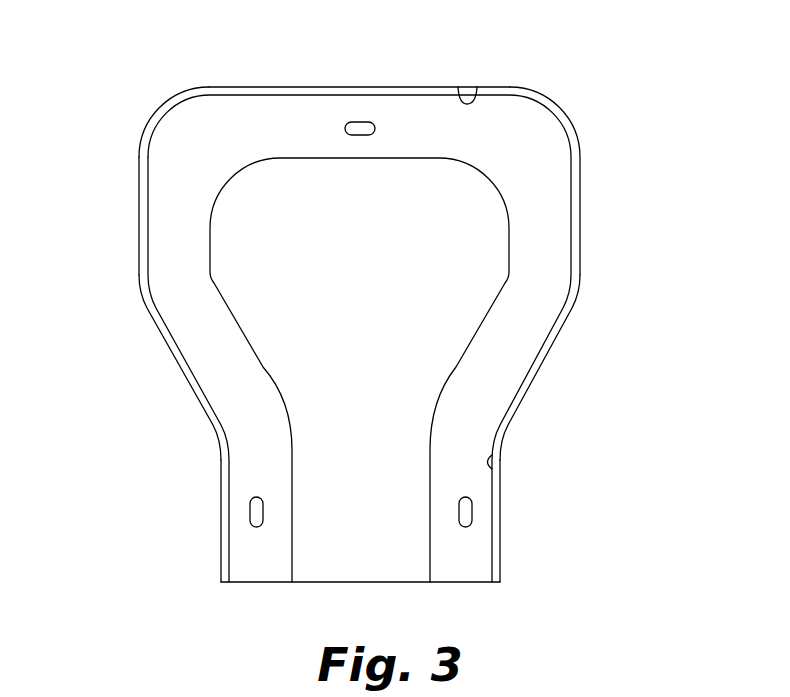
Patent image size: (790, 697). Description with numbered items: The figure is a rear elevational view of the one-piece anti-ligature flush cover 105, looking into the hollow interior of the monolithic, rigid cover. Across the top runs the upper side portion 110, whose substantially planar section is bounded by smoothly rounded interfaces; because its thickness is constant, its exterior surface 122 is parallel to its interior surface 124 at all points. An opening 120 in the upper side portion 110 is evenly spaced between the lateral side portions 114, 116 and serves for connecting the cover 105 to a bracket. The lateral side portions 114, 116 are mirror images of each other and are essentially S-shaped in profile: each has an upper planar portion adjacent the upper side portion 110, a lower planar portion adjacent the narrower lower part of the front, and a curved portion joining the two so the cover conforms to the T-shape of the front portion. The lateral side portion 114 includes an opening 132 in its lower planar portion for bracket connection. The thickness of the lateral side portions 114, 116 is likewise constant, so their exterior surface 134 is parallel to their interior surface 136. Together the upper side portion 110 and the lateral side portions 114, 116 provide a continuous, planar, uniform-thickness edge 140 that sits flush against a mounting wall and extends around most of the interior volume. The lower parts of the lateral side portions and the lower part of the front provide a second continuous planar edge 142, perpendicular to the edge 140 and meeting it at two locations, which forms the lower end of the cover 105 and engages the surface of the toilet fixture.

The one-piece anti-ligature flush cover 105 is at (371, 52).
The upper side portion 110 is at (303, 110).
The lateral side portion 114 is at (520, 400).
The lateral side portion 116 is at (138, 217).
The opening 120 is at (360, 121).
The exterior surface 122 is at (163, 105).
The interior surface 124 is at (468, 103).
The opening 132 is at (467, 512).
The exterior surface 134 is at (581, 227).
The interior surface 136 is at (490, 462).
The edge 140 is at (185, 373).
The edge 142 is at (223, 584).